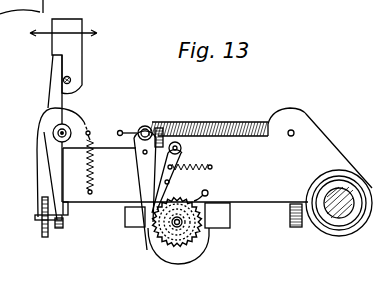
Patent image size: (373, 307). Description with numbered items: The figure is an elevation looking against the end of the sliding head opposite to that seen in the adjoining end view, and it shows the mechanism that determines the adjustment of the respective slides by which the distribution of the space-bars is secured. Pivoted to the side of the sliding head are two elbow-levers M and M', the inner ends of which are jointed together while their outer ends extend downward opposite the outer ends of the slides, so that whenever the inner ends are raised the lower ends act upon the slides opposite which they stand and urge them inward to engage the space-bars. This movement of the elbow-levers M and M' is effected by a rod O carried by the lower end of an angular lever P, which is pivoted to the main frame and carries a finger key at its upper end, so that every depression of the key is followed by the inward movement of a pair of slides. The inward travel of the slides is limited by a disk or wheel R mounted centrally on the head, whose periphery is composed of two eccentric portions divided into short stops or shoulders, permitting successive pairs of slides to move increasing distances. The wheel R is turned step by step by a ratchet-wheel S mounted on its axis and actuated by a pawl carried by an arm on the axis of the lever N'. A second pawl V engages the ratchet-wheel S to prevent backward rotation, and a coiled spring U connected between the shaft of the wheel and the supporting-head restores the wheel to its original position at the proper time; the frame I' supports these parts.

The angular lever P is at (65, 63).
The rod O is at (71, 80).
The lever N' is at (111, 160).
The frame I' is at (185, 175).
The elbow-lever M' is at (176, 121).
The elbow-lever M is at (260, 172).
The second pawl V is at (185, 158).
The coiled spring U is at (208, 192).
The ratchet-wheel S is at (150, 245).
The eccentric disk or wheel R is at (217, 220).